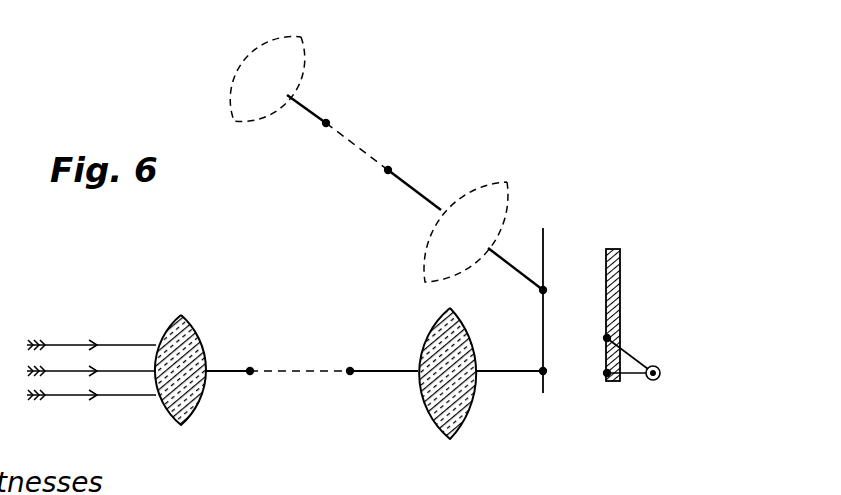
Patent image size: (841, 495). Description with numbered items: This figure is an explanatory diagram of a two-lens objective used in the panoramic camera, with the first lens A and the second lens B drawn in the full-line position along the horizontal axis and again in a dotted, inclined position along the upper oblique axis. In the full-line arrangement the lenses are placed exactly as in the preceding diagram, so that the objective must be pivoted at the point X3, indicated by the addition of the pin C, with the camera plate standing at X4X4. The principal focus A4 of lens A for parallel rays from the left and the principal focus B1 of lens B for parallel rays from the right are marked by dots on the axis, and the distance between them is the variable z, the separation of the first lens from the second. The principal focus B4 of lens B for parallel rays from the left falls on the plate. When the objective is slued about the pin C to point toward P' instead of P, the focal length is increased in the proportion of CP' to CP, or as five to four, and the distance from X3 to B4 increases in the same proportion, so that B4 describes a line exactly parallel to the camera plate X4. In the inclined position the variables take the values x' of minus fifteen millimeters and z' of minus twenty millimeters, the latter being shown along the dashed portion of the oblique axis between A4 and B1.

The first lens A is at (165, 347).
The principal focus of lens A A4 is at (250, 368).
The principal focus of lens B B1 is at (350, 368).
The second lens B is at (434, 335).
The principal focus of lens B for parallel rays from the left B4 is at (549, 282).
The distance between the lenses z is at (300, 371).
The distance between the lenses in the inclined position z' is at (357, 146).
The plate point for the full-line position P is at (604, 367).
The plate point for the inclined position P' is at (589, 322).
The camera plate X4 is at (618, 335).
The pivot point X3 is at (662, 391).
The focal length in the inclined position x' is at (639, 347).
The pivot pin C is at (661, 367).